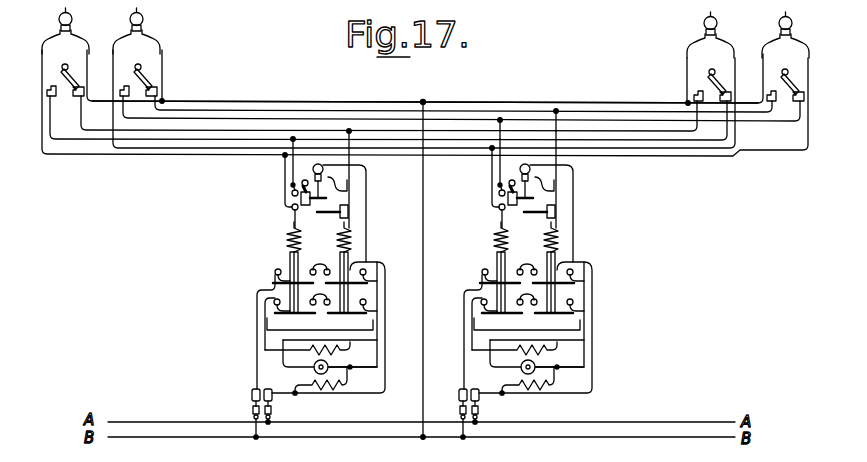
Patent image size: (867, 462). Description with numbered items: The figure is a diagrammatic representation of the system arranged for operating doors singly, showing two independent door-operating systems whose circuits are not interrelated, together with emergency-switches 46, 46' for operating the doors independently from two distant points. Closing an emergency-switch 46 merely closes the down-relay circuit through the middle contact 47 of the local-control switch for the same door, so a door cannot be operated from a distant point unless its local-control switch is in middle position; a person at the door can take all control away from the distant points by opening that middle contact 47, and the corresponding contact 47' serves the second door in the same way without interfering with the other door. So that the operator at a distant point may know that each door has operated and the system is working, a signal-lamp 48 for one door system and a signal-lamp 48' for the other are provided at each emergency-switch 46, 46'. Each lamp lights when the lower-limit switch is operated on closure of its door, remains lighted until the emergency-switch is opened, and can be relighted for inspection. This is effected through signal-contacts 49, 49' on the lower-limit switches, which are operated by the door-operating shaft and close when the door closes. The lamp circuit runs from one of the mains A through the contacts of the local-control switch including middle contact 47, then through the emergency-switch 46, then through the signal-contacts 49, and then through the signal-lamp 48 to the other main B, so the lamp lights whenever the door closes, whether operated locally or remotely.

The signal-lamp 48 is at (385, 33).
The signal-lamp 48' is at (458, 33).
The emergency-switch 46 is at (389, 74).
The emergency-switch 46' is at (462, 74).
The middle contact of local-control switch 47 is at (320, 191).
The middle contact of local-control switch 47' is at (527, 191).
The signal-contacts 49 is at (319, 233).
The signal-contacts 49' is at (526, 233).
The main A is at (318, 285).
The main B is at (632, 101).